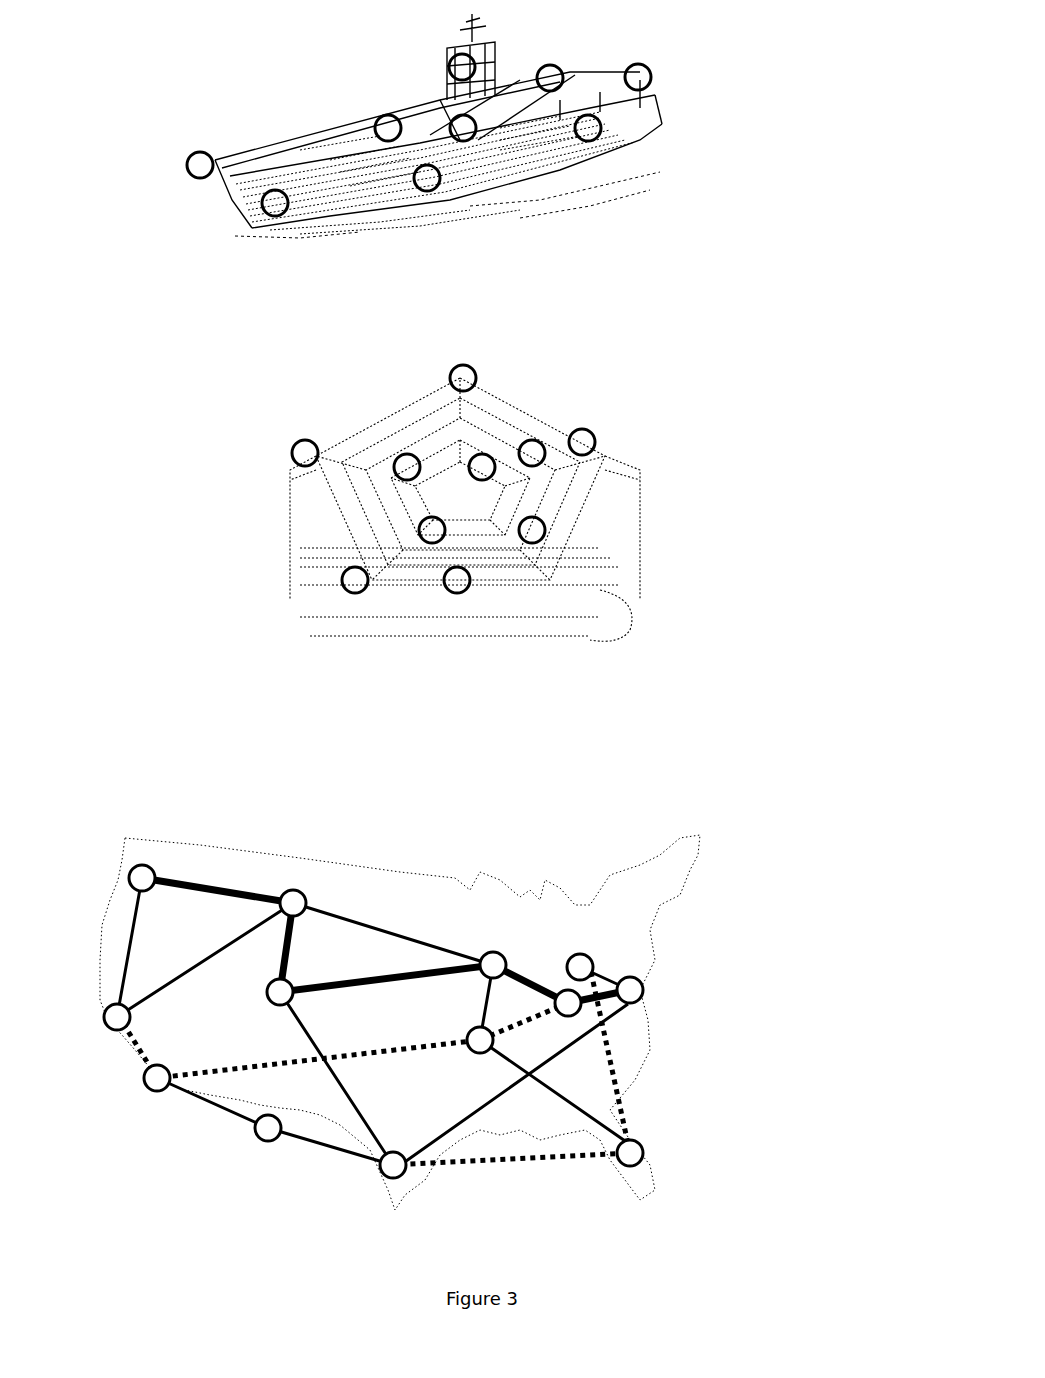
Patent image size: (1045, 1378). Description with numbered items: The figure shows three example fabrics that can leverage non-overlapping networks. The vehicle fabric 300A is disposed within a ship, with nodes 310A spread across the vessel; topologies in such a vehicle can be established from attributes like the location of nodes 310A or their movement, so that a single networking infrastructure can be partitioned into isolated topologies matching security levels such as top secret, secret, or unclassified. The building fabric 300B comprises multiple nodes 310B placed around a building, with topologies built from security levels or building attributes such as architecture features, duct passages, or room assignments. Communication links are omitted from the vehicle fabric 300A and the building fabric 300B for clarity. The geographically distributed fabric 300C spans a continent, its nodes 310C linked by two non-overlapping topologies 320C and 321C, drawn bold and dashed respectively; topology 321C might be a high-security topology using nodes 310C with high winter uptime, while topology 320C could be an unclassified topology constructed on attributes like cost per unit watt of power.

The vehicle fabric 300A is at (485, 126).
The nodes 310A is at (350, 123).
The building fabric 300B is at (499, 483).
The nodes 310B is at (347, 459).
The geographically distributed fabric 300C is at (502, 983).
The nodes 310C is at (365, 958).
The topology 320C is at (355, 967).
The topology 321C is at (243, 1078).